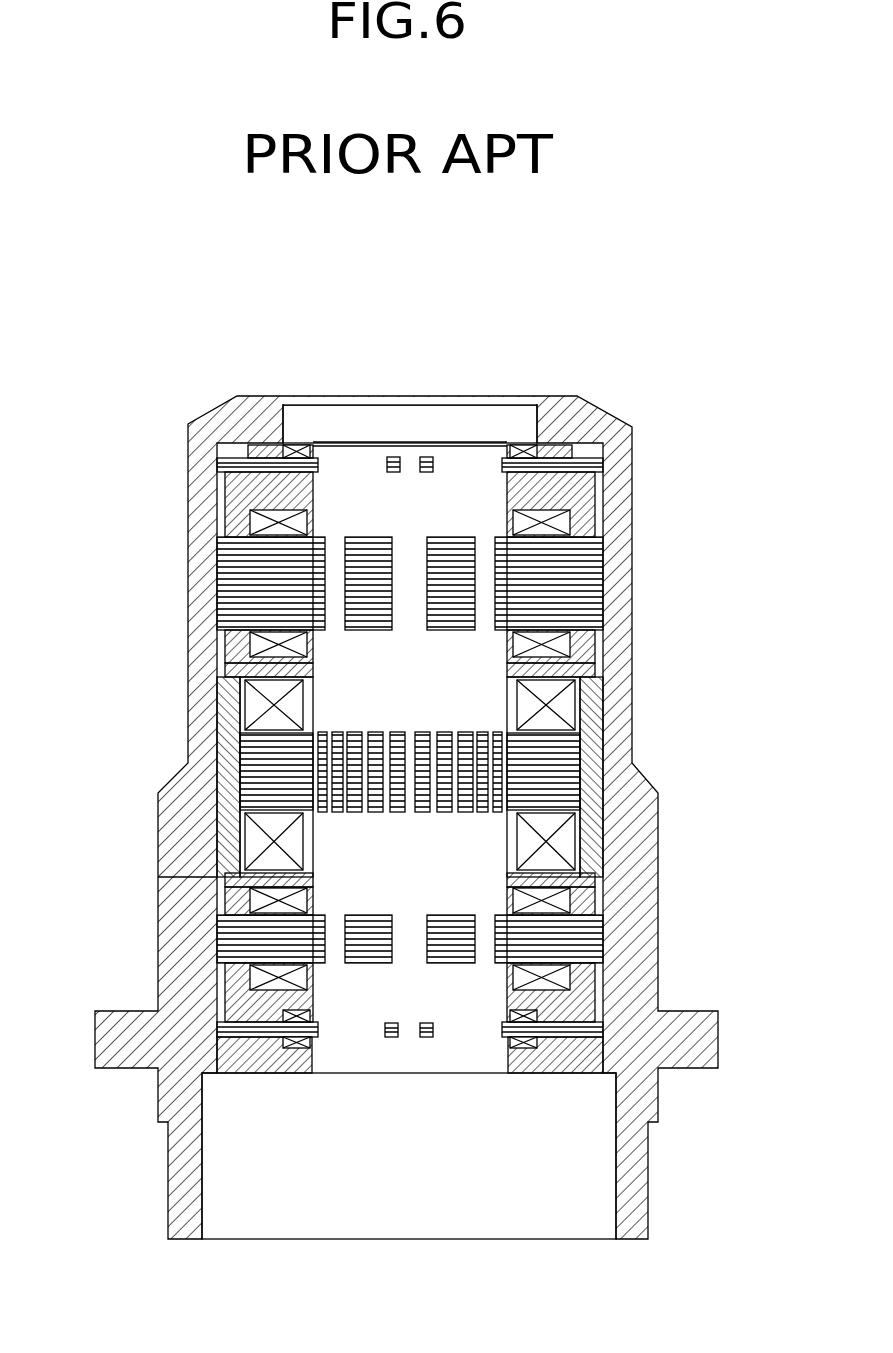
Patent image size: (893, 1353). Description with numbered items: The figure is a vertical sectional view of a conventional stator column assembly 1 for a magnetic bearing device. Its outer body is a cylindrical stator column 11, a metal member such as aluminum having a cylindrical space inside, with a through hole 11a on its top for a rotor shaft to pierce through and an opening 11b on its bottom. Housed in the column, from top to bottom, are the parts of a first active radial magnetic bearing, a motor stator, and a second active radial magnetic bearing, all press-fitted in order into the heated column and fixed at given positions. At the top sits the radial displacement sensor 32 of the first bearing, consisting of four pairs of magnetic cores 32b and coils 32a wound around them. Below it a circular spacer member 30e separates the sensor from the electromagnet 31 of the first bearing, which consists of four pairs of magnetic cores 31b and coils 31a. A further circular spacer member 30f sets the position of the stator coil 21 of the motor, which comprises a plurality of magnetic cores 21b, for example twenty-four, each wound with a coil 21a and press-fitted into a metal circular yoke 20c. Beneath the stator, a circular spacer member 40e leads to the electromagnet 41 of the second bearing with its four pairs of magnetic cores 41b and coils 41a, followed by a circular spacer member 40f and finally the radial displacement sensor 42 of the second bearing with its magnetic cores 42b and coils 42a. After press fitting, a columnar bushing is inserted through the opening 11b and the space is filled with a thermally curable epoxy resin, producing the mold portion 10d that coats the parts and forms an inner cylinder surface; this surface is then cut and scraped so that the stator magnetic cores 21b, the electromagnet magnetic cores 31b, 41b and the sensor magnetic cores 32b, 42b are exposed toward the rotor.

The stator column assembly 1 is at (618, 394).
The cylindrical stator column 11 is at (160, 810).
The through hole 11a is at (432, 398).
The opening 11b is at (493, 1217).
The mold portion 10d is at (205, 517).
The metal circular yoke 20c is at (197, 765).
The circular spacer member 30e is at (217, 471).
The circular spacer member 30f is at (205, 655).
The circular spacer member 40e is at (220, 875).
The circular spacer member 40f is at (217, 995).
The stator coil 21 is at (642, 775).
The coil 21a is at (563, 838).
The magnetic core 21b is at (548, 757).
The electromagnet 31 is at (629, 600).
The coil 31a is at (560, 646).
The magnetic core 31b is at (563, 583).
The radial displacement sensor 32 is at (629, 475).
The coil 32a is at (527, 478).
The magnetic core 32b is at (607, 464).
The electromagnet 41 is at (641, 968).
The coil 41a is at (560, 975).
The magnetic core 41b is at (580, 933).
The radial displacement sensor 42 is at (656, 1056).
The coil 42a is at (523, 1047).
The magnetic core 42b is at (600, 1037).